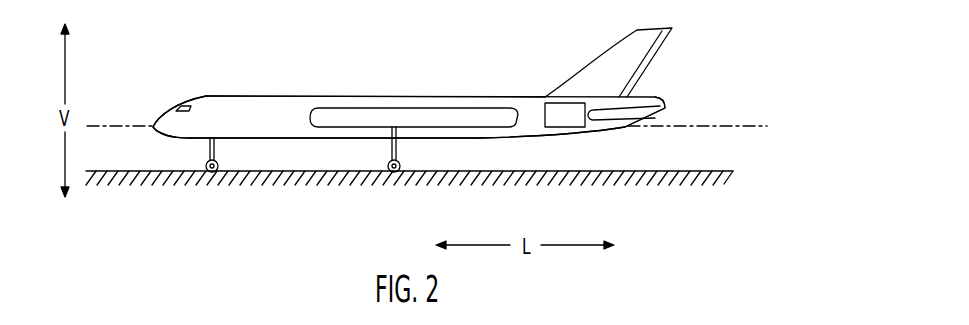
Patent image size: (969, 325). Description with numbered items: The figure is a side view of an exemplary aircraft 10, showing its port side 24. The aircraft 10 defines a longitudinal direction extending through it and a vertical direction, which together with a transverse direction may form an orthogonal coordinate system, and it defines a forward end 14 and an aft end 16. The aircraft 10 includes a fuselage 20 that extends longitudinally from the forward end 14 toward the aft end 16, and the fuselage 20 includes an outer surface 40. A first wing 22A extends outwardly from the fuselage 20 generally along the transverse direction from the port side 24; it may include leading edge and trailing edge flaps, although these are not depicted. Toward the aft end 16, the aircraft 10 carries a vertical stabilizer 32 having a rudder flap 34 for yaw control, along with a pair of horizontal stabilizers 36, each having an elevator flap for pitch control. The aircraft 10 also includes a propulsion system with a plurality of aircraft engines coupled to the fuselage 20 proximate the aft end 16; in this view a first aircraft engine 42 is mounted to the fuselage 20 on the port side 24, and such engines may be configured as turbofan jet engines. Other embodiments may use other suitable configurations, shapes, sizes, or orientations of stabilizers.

The aircraft 10 is at (218, 81).
The forward end 14 is at (155, 133).
The aft end 16 is at (673, 112).
The fuselage 20 is at (227, 133).
The first wing 22A is at (452, 117).
The port side 24 is at (470, 147).
The vertical stabilizer 32 is at (636, 56).
The rudder flap 34 is at (672, 31).
The horizontal stabilizer 36 is at (622, 116).
The outer surface 40 is at (323, 82).
The first aircraft engine 42 is at (555, 112).